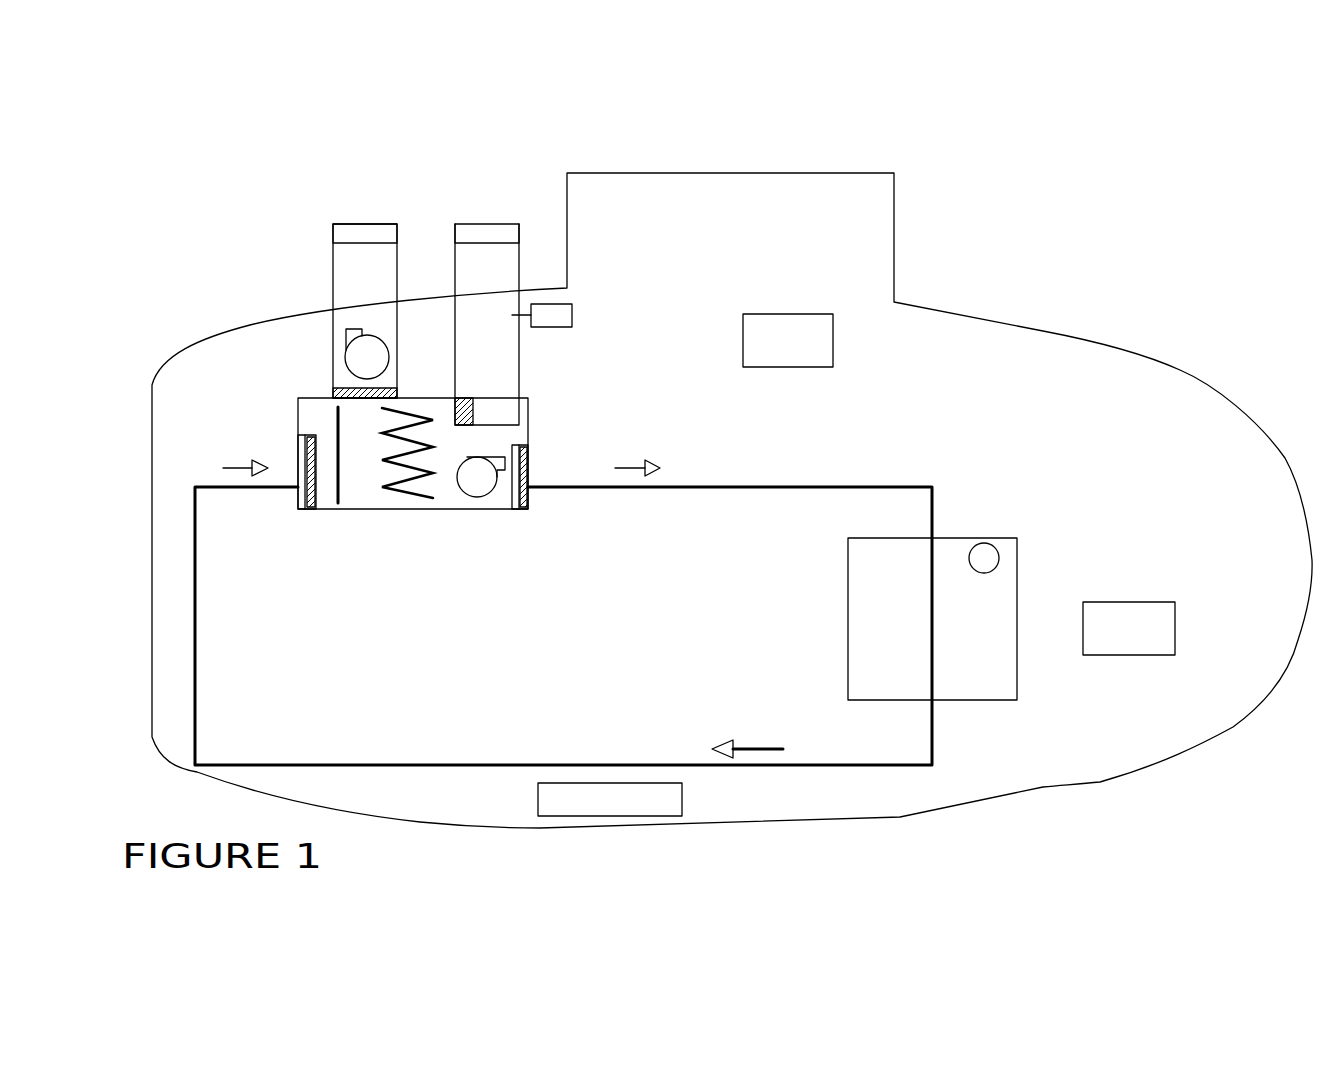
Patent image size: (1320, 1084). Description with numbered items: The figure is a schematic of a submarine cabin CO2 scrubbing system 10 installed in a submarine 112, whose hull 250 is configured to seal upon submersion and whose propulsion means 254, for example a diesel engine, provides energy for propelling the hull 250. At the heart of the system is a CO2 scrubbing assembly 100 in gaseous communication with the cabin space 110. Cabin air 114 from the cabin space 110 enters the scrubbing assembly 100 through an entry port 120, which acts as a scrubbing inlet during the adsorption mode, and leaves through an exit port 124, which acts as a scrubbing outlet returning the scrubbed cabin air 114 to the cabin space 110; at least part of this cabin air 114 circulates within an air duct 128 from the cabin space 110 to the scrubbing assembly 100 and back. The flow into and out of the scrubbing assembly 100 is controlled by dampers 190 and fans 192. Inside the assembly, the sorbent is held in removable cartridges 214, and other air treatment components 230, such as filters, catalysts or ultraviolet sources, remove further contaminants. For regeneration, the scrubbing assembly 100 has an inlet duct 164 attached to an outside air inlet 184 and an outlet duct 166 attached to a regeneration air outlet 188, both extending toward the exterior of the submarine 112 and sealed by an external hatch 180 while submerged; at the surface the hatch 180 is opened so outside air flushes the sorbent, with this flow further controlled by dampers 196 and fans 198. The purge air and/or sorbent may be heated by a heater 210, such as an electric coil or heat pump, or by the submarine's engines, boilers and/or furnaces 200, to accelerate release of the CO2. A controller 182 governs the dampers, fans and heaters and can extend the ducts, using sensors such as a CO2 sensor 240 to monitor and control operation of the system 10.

The submarine cabin CO2 scrubbing system 10 is at (1180, 237).
The CO2 scrubbing assembly 100 is at (213, 260).
The cabin space 110 is at (1017, 538).
The submarine 112 is at (1043, 331).
The cabin air 114 is at (750, 749).
The entry port 120 is at (298, 450).
The exit port 124 is at (528, 473).
The air duct 128 is at (197, 650).
The inlet duct 164 is at (512, 375).
The outlet duct 166 is at (332, 353).
The external hatch 180 is at (355, 232).
The controller 182 is at (792, 350).
The outside air inlet 184 is at (468, 400).
The regeneration air outlet 188 is at (333, 395).
The dampers 190 is at (300, 510).
The fans 192 is at (473, 497).
The dampers 196 is at (455, 400).
The fans 198 is at (368, 337).
The engines, boilers and/or furnaces 200 is at (1133, 640).
The heater 210 is at (572, 315).
The cartridges 214 is at (408, 498).
The air treatment components 230 is at (338, 503).
The CO2 sensor 240 is at (984, 558).
The hull 250 is at (1100, 782).
The propulsion means 254 is at (658, 802).